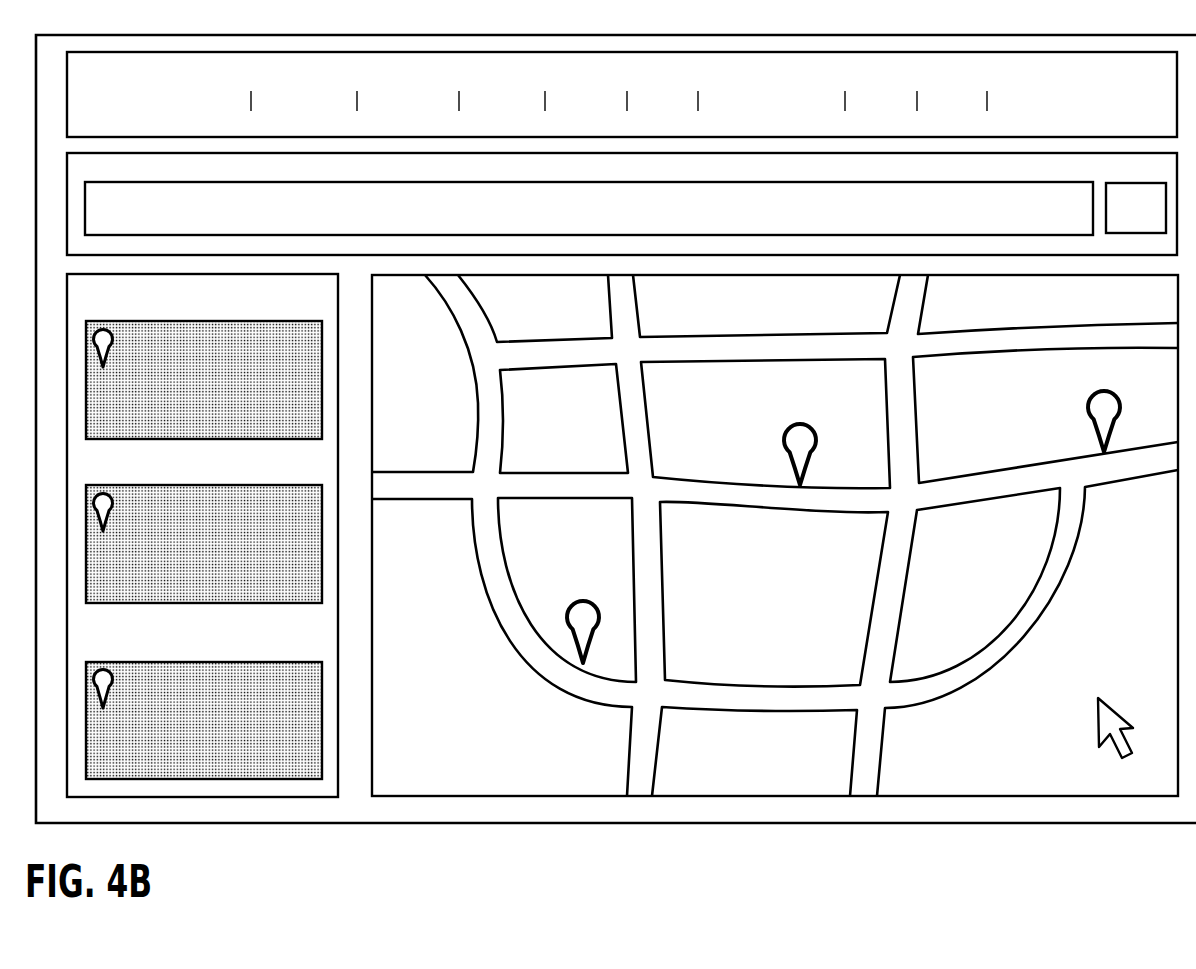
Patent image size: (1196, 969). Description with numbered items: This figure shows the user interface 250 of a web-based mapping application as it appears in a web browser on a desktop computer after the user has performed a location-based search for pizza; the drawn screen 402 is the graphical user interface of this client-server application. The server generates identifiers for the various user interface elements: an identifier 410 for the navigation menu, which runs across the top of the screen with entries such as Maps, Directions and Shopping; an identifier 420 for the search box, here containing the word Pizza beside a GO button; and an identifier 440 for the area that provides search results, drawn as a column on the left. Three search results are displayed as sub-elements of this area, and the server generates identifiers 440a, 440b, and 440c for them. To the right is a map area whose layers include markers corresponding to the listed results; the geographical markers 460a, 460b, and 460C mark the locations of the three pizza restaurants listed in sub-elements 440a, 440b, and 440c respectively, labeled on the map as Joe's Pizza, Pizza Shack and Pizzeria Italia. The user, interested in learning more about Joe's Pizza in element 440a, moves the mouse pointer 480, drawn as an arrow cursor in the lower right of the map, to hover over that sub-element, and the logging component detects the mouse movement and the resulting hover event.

The user interface 250 is at (908, 823).
The user interface 402 is at (73, 853).
The navigation menu identifier 410 is at (622, 94).
The search box identifier 420 is at (622, 204).
The search results area identifier 440 is at (202, 535).
The search result sub-element 440a is at (204, 380).
The search result sub-element 440b is at (204, 544).
The search result sub-element 440c is at (204, 720).
The geographical marker 460a is at (780, 438).
The geographical marker 460b is at (1079, 413).
The geographical marker 460C is at (568, 628).
The mouse pointer 480 is at (1098, 699).